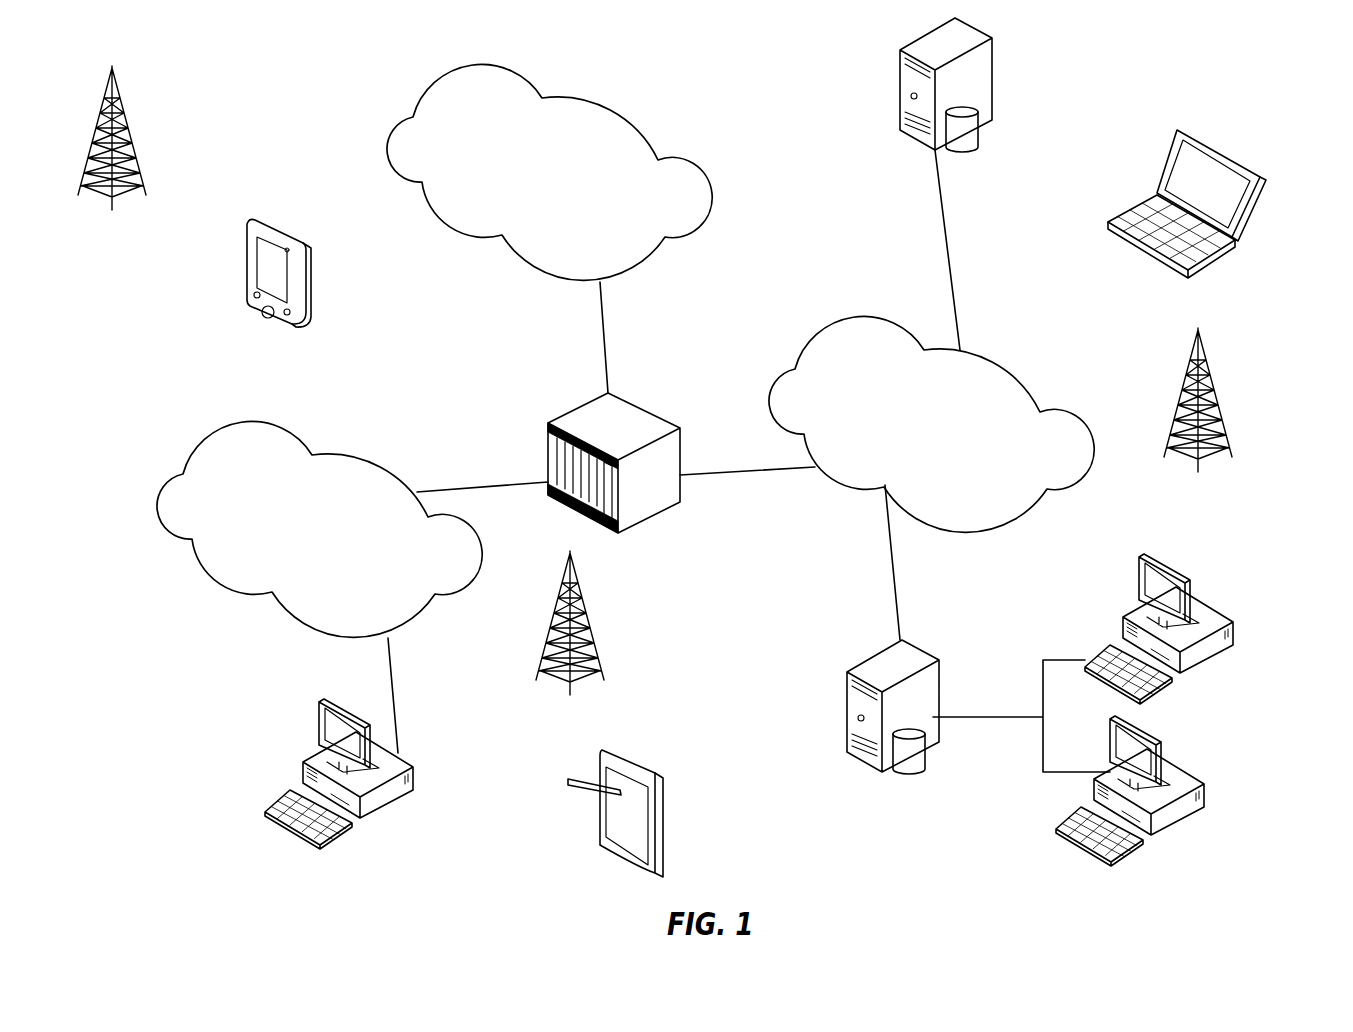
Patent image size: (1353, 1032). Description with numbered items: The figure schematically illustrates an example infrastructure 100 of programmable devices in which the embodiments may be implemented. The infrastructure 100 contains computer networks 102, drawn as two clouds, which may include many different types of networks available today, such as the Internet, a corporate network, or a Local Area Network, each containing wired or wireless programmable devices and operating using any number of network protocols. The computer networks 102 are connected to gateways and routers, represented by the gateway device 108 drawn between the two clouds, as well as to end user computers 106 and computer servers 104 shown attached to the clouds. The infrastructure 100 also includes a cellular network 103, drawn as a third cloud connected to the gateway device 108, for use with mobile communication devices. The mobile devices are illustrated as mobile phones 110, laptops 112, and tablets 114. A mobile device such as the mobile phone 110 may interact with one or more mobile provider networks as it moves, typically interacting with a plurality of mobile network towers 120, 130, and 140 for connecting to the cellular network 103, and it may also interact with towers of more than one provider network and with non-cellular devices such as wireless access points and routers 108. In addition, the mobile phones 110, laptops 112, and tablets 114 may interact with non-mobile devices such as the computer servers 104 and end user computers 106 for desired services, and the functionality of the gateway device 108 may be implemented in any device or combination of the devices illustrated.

The infrastructure 100 is at (1087, 122).
The computer networks 102 is at (297, 438).
The cellular network 103 is at (597, 103).
The computer servers 104 is at (902, 75).
The end user computers 106 is at (1190, 582).
The gateways and routers 108 is at (635, 408).
The mobile phones 110 is at (290, 230).
The laptops 112 is at (1230, 160).
The tablets 114 is at (643, 768).
The mobile network tower 120 is at (570, 639).
The mobile network tower 130 is at (1198, 417).
The mobile network tower 140 is at (112, 154).